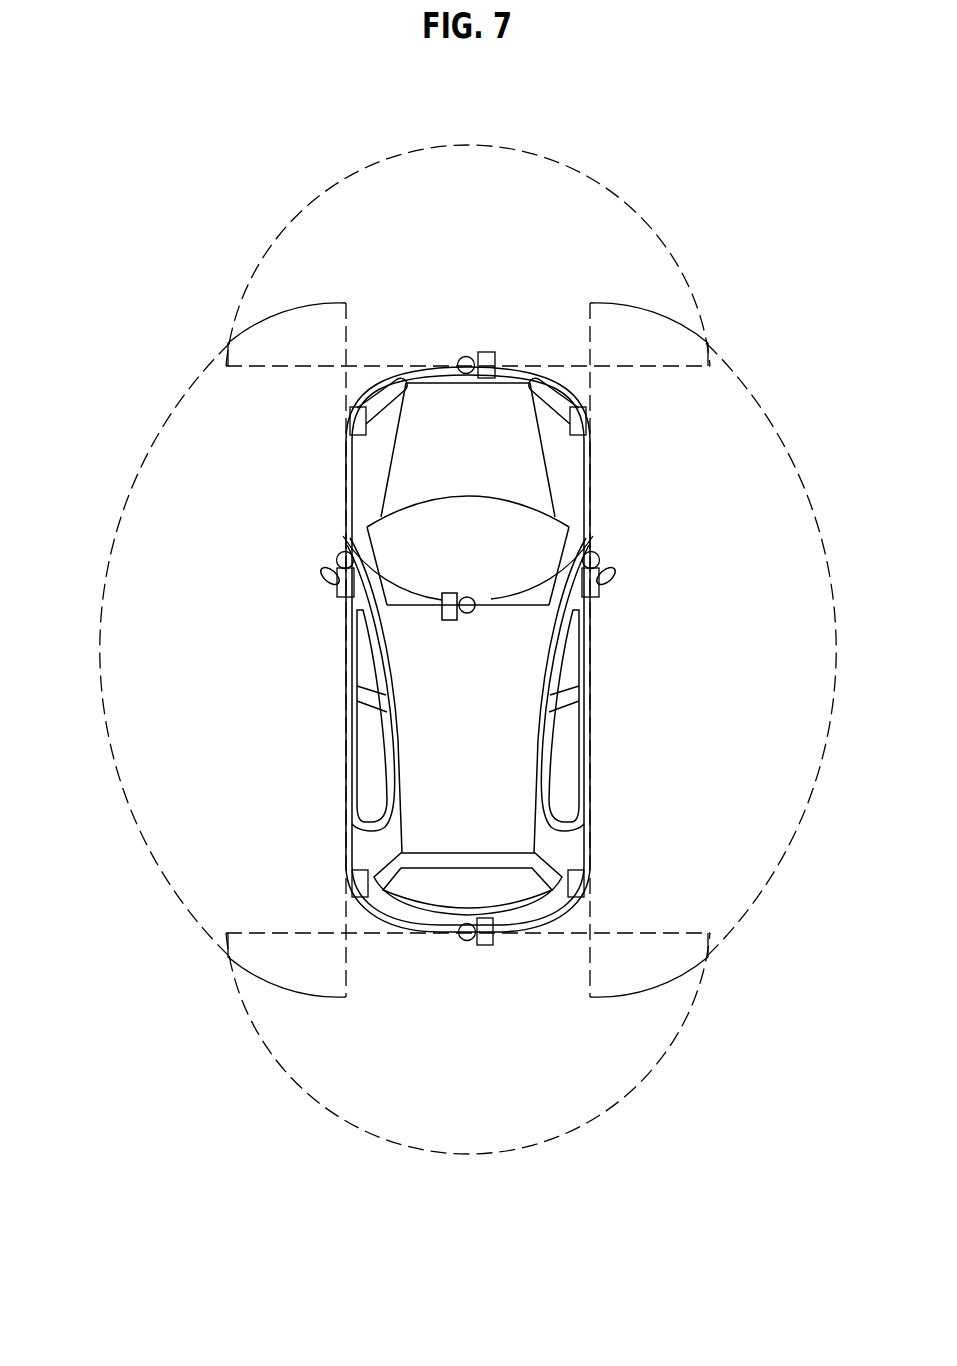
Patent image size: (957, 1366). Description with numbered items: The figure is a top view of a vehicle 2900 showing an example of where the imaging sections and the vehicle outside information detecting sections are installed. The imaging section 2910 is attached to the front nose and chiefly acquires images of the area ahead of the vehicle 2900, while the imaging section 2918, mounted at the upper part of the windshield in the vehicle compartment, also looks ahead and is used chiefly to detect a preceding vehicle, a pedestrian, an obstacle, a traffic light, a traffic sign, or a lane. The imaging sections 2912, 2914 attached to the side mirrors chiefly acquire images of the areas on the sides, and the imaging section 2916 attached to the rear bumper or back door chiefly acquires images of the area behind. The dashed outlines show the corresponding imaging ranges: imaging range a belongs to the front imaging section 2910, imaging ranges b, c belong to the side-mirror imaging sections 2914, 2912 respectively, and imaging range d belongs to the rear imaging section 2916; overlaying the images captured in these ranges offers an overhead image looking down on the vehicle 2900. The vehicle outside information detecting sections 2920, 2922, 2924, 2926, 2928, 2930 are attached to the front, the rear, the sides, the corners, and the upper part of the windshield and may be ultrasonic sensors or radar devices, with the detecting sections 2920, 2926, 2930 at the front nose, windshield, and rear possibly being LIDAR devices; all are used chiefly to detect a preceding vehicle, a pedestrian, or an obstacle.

The vehicle 2900 is at (351, 466).
The imaging section 2910 is at (466, 355).
The imaging section 2912 is at (337, 559).
The imaging section 2914 is at (599, 557).
The imaging section 2916 is at (466, 943).
The imaging section 2918 is at (594, 537).
The vehicle outside information detecting section 2920 is at (488, 351).
The vehicle outside information detecting section 2922 is at (349, 418).
The vehicle outside information detecting section 2924 is at (337, 586).
The vehicle outside information detecting section 2926 is at (342, 534).
The vehicle outside information detecting section 2928 is at (352, 880).
The vehicle outside information detecting section 2930 is at (484, 946).
The imaging range a is at (467, 148).
The imaging range b is at (835, 643).
The imaging range c is at (101, 643).
The imaging range d is at (467, 1149).